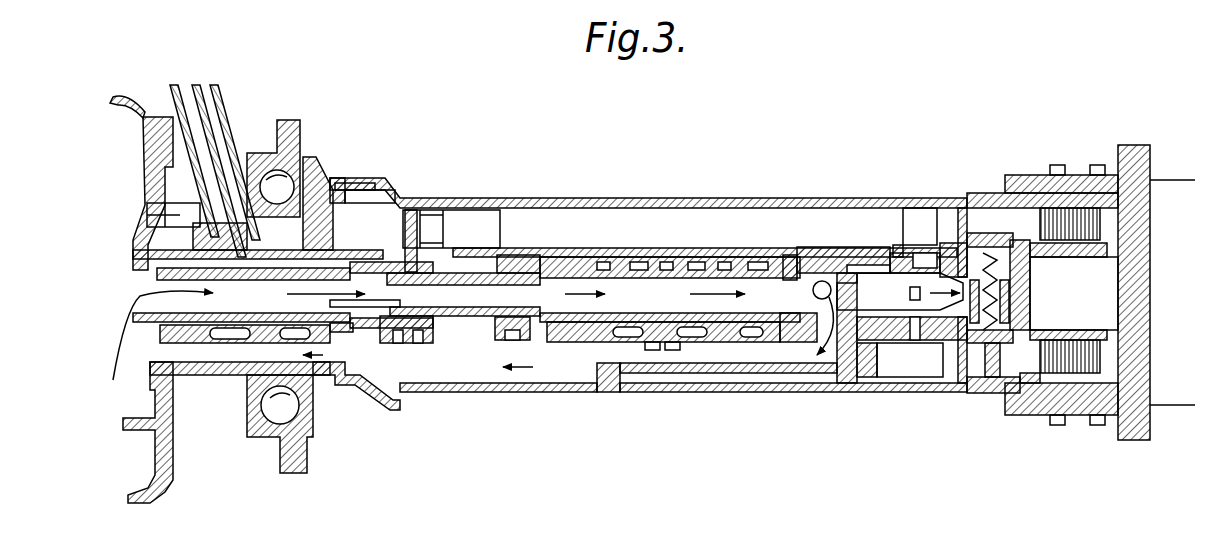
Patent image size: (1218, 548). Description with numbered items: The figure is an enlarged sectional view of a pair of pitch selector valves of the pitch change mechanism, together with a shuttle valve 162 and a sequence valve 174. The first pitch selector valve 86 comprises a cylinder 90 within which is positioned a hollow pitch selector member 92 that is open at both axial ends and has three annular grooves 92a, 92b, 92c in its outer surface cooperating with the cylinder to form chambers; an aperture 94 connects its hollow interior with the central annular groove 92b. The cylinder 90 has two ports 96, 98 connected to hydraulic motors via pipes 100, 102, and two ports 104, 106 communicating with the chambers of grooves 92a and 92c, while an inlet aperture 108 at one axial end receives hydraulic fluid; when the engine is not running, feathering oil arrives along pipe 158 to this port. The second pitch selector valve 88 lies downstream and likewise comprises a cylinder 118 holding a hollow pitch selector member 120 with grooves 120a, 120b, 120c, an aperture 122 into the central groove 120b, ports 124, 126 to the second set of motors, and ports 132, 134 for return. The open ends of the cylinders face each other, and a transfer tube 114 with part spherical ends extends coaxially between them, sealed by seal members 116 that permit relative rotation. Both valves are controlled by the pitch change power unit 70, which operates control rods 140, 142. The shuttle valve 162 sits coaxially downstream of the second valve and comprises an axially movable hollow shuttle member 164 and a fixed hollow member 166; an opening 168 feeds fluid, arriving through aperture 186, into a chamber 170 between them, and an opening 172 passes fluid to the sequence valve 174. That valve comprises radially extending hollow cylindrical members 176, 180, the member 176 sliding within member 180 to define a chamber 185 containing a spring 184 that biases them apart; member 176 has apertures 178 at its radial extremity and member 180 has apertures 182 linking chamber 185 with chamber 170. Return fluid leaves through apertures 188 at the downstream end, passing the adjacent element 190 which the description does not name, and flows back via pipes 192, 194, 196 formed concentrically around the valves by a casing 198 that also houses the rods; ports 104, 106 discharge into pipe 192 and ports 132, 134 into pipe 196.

The pitch change power unit 70 is at (1178, 205).
The first pitch selector valve 86 is at (400, 430).
The second pitch selector valve 88 is at (737, 395).
The cylinder 90 is at (333, 250).
The pitch selector member 92 is at (430, 337).
The annular groove 92a is at (210, 317).
The central annular groove 92b is at (280, 330).
The annular groove 92c is at (333, 327).
The aperture 94 is at (267, 273).
The port 96 is at (233, 220).
The port 98 is at (287, 245).
The pipe 100 is at (190, 85).
The pipe 102 is at (218, 110).
The port 104 is at (187, 327).
The port 106 is at (373, 390).
The inlet aperture 108 is at (528, 352).
The transfer tube 114 is at (453, 307).
The seal members 116 is at (510, 317).
The cylinder 118 is at (653, 333).
The pitch selector member 120 is at (532, 350).
The annular groove 120a is at (598, 248).
The central annular groove 120b is at (663, 248).
The annular groove 120c is at (722, 248).
The aperture 122 is at (670, 333).
The port 124 is at (637, 262).
The port 126 is at (695, 262).
The port 132 is at (630, 353).
The port 134 is at (758, 262).
The control rod 140 is at (543, 220).
The control rod 142 is at (913, 370).
The pipe 158 is at (133, 117).
The shuttle valve 162 is at (855, 257).
The shuttle member 164 is at (895, 235).
The hollow member 166 is at (958, 235).
The opening 168 is at (922, 235).
The chamber 170 is at (842, 262).
The opening 172 is at (963, 390).
The sequence valve 174 is at (1010, 240).
The hollow cylindrical member 176 is at (1020, 390).
The apertures 178 is at (1032, 327).
The hollow cylindrical member 180 is at (1032, 263).
The apertures 182 is at (1032, 282).
The spring 184 is at (1032, 305).
The chamber 185 is at (993, 363).
The aperture 186 is at (793, 262).
The apertures 188 is at (832, 360).
The spacer 190 is at (870, 385).
The pipe 192 is at (255, 357).
The pipe 194 is at (475, 372).
The pipe 196 is at (727, 355).
The casing 198 is at (797, 387).